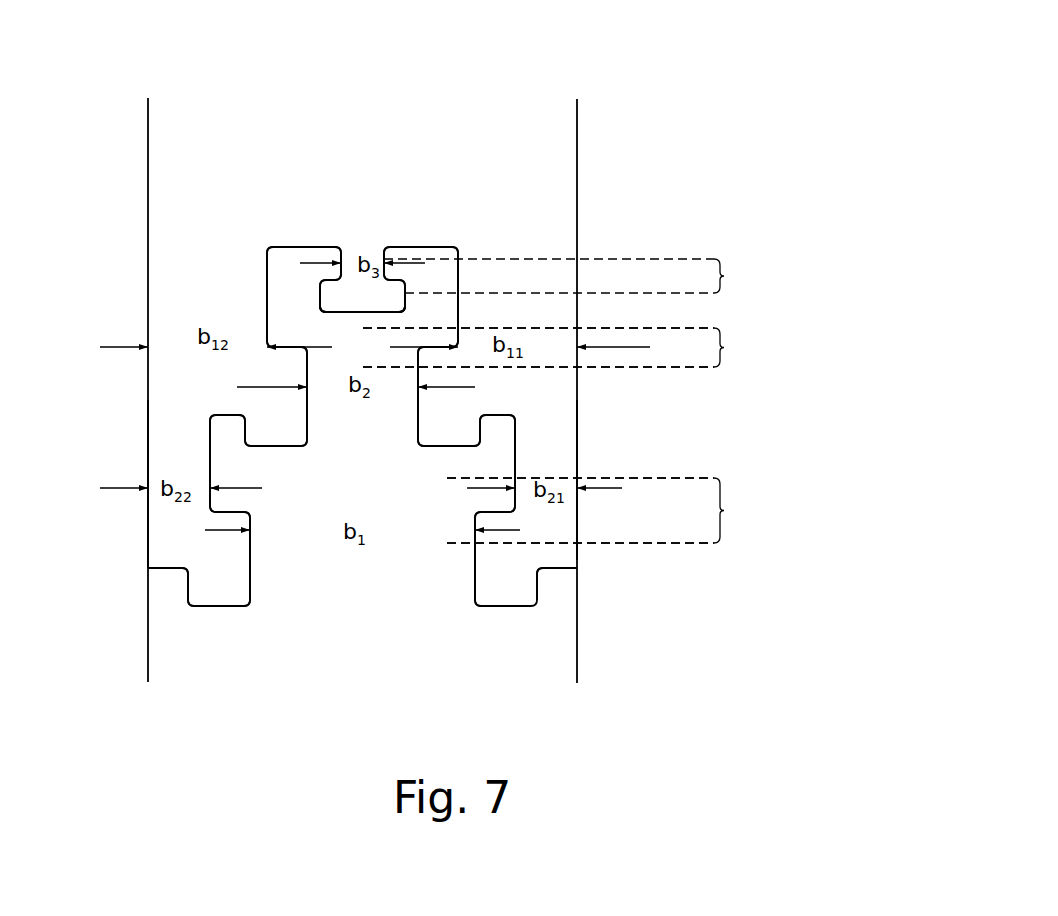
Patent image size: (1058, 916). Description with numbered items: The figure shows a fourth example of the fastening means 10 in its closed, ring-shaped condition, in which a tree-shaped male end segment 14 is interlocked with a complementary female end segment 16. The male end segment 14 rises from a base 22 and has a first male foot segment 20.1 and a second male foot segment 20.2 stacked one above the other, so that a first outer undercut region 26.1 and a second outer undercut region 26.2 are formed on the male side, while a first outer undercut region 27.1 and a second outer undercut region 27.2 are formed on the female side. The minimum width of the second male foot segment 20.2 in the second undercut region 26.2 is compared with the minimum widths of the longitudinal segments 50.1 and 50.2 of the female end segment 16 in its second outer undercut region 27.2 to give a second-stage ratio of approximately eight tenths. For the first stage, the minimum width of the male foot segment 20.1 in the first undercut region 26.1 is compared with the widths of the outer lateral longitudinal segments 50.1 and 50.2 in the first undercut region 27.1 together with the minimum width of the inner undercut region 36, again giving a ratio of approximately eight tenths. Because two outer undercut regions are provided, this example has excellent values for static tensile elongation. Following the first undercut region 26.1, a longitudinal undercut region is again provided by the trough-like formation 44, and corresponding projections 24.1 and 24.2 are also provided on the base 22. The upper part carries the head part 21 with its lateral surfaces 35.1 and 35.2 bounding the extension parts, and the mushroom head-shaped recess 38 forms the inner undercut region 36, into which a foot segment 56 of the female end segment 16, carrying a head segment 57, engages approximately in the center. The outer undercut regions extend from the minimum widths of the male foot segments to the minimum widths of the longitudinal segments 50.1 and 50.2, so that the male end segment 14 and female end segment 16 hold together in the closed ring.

The fastening means 10 is at (658, 68).
The male end segment 14 is at (733, 667).
The female end segment 16 is at (138, 67).
The male foot segment 20.1 is at (260, 573).
The second male foot segment 20.2 is at (325, 405).
The head part 21 is at (307, 295).
The base 22 is at (217, 607).
The projection 24.1 is at (165, 595).
The projection 24.2 is at (565, 582).
The first outer undercut region 26.1 is at (613, 510).
The second outer undercut region 26.2 is at (571, 347).
The first outer undercut region 27.1 is at (596, 347).
The second outer undercut region 27.2 is at (638, 510).
The lateral surface 35.1 is at (262, 246).
The lateral surface 35.2 is at (463, 268).
The inner undercut region 36 is at (567, 276).
The mushroom head-shaped recess 38 is at (433, 255).
The trough-like formation 44 is at (442, 438).
The longitudinal segment 50.1 is at (163, 518).
The longitudinal segment 50.2 is at (567, 449).
The foot segment 56 is at (350, 257).
The head segment 57 is at (397, 290).